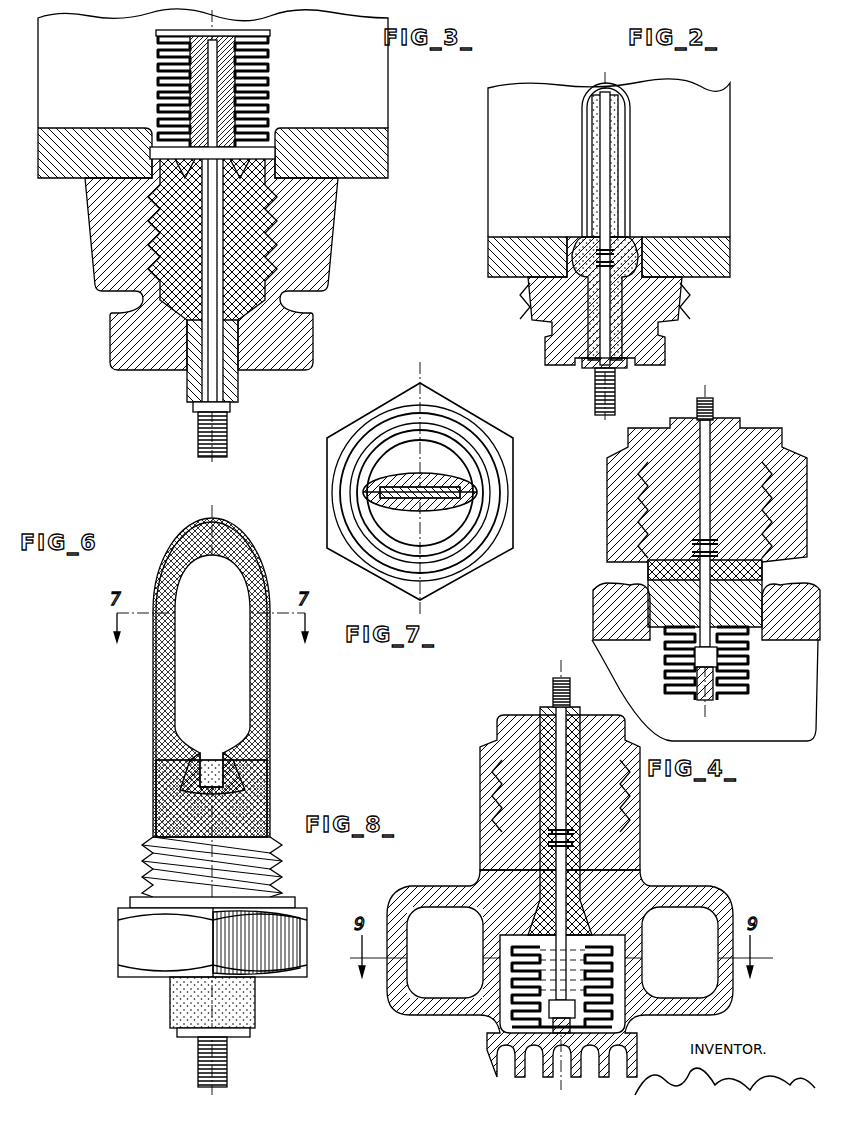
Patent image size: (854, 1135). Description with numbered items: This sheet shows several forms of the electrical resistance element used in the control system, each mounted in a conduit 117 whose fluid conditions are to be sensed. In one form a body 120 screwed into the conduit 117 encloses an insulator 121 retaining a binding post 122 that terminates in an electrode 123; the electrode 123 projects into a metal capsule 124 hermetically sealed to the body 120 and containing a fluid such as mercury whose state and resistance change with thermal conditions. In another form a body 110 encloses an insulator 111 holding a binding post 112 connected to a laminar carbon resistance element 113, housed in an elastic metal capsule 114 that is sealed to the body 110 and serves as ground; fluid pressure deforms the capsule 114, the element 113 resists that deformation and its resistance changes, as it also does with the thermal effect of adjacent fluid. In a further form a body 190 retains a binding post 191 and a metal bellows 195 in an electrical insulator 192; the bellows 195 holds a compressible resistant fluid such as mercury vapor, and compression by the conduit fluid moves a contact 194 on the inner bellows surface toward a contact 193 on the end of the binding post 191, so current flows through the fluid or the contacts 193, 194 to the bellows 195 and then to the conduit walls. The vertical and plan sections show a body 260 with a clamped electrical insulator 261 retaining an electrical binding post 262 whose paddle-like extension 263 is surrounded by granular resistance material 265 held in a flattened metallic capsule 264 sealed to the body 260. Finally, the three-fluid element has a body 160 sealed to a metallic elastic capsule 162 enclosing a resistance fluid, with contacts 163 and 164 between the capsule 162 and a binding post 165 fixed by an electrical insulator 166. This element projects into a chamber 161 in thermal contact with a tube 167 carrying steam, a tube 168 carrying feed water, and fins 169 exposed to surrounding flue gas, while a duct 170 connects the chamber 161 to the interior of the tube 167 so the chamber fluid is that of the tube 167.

In FIG. 3, the body 110 is at (300, 320).
In FIG. 3, the insulator 111 is at (232, 389).
In FIG. 3, the binding post 112 is at (228, 418).
In FIG. 3, the electrical resistance element 113 is at (240, 72).
In FIG. 3, the elastic metal capsule 114 is at (268, 38).
In FIG. 3, the conduit 117 is at (68, 134).
In FIG. 2, the conduit 117 is at (515, 240).
In FIG. 4, the conduit 117 is at (598, 618).
In FIG. 2, the body 120 is at (665, 345).
In FIG. 2, the insulator 121 is at (625, 237).
In FIG. 2, the binding post 122 is at (615, 387).
In FIG. 2, the electrode 123 is at (610, 122).
In FIG. 2, the metal capsule 124 is at (628, 154).
In FIG. 8, the body 160 is at (632, 832).
In FIG. 8, the chamber 161 is at (505, 1005).
In FIG. 8, the metallic elastic capsule 162 is at (610, 972).
In FIG. 8, the contact 163 is at (553, 1012).
In FIG. 8, the contact 164 is at (560, 1028).
In FIG. 8, the binding post 165 is at (571, 683).
In FIG. 8, the electrical insulator 166 is at (580, 710).
In FIG. 8, the tube 167 is at (448, 884).
In FIG. 8, the tube 168 is at (688, 895).
In FIG. 8, the fins 169 is at (510, 1067).
In FIG. 8, the duct 170 is at (492, 960).
In FIG. 4, the body 190 is at (625, 556).
In FIG. 4, the binding post 191 is at (713, 402).
In FIG. 4, the electrical insulator 192 is at (740, 420).
In FIG. 4, the contact 193 is at (717, 657).
In FIG. 4, the contact 194 is at (713, 692).
In FIG. 4, the metal bellows 195 is at (746, 681).
In FIG. 7, the body 260 is at (332, 500).
In FIG. 6, the body 260 is at (128, 933).
In FIG. 6, the electrical insulator 261 is at (188, 1005).
In FIG. 6, the electrical binding post 262 is at (227, 1052).
In FIG. 7, the paddle-like extension 263 is at (436, 508).
In FIG. 6, the paddle-like extension 263 is at (238, 710).
In FIG. 7, the flattened metallic capsule 264 is at (375, 483).
In FIG. 6, the flattened metallic capsule 264 is at (272, 740).
In FIG. 7, the granular resistance material 265 is at (400, 482).
In FIG. 6, the granular resistance material 265 is at (262, 680).